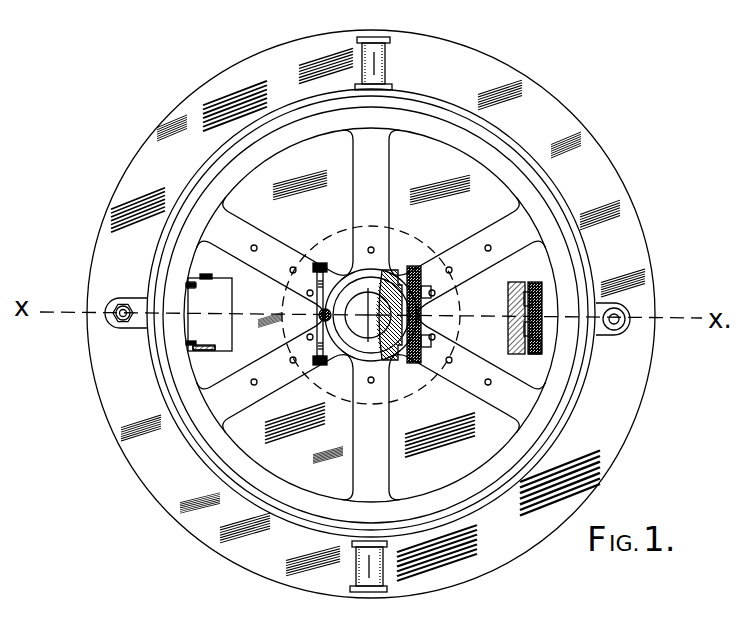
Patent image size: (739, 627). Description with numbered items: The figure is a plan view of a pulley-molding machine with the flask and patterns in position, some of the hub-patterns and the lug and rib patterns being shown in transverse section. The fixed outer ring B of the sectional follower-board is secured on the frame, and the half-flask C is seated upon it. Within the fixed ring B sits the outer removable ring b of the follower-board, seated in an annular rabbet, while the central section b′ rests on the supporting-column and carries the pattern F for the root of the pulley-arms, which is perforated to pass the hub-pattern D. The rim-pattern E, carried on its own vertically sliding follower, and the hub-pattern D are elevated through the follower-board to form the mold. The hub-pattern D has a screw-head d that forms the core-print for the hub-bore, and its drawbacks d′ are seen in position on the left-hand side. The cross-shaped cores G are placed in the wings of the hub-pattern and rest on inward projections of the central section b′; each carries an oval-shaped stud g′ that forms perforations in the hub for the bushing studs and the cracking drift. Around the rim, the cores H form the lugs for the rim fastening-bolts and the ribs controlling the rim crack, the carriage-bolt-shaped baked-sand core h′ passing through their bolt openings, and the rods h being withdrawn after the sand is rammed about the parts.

The outer ring of the sectional follower-board B is at (371, 314).
The half-flask C is at (557, 184).
The hub-pattern D is at (372, 277).
The rim-pattern E is at (298, 487).
The pattern for the root of the pulley-arms F is at (354, 373).
The core G is at (402, 262).
The core H is at (224, 296).
The outer removable ring of the follower-board b is at (357, 281).
The central section of the follower-board b′ is at (402, 386).
The screw-head d is at (368, 315).
The drawbacks d′ is at (286, 267).
The oval-shaped stud g′ is at (378, 319).
The rods h is at (197, 338).
The core h′ is at (537, 358).